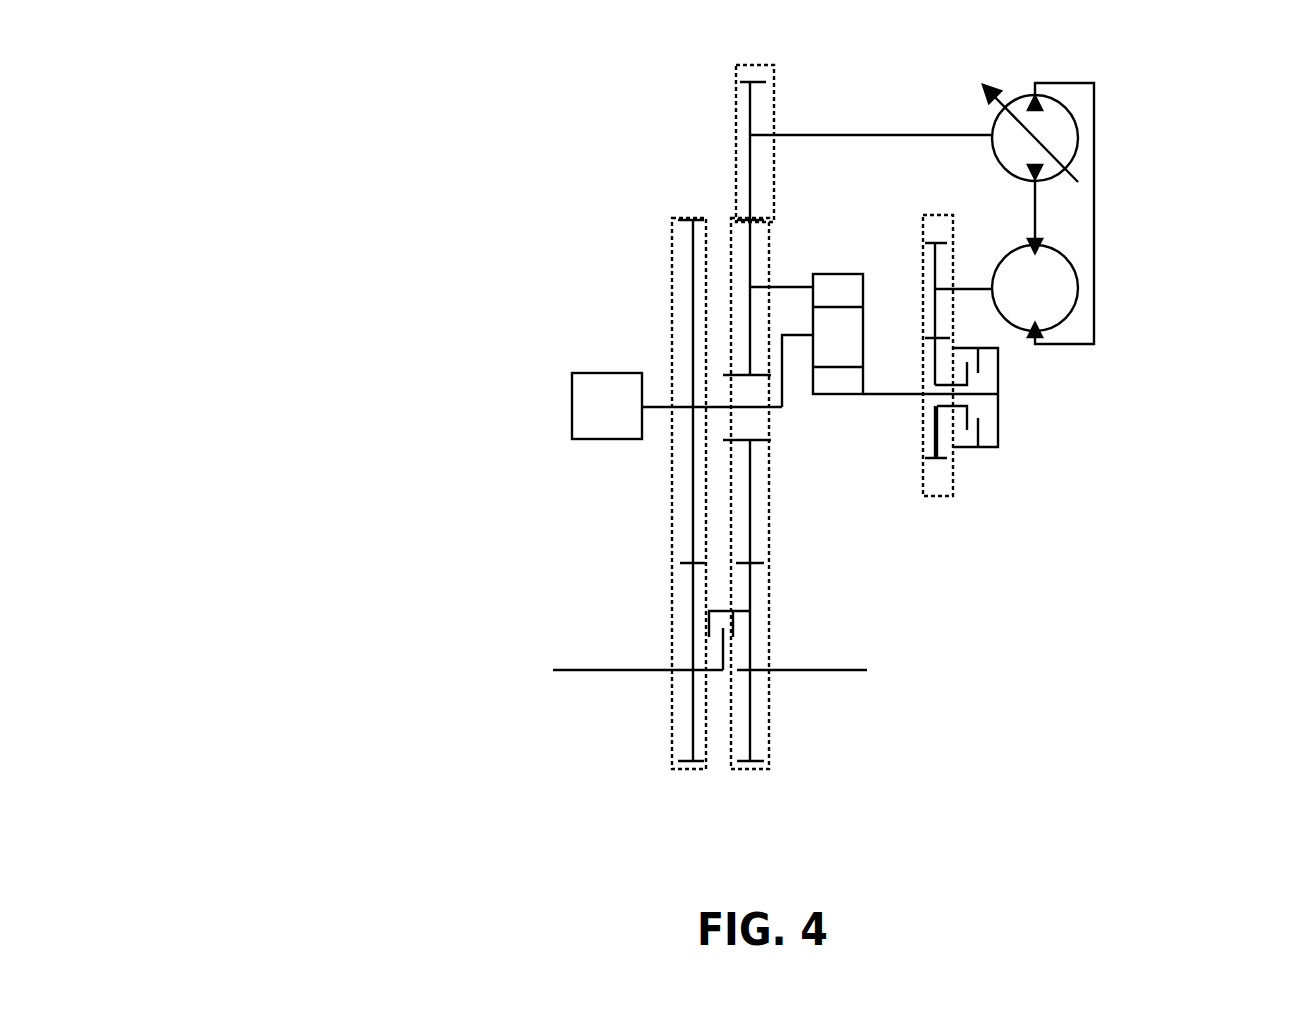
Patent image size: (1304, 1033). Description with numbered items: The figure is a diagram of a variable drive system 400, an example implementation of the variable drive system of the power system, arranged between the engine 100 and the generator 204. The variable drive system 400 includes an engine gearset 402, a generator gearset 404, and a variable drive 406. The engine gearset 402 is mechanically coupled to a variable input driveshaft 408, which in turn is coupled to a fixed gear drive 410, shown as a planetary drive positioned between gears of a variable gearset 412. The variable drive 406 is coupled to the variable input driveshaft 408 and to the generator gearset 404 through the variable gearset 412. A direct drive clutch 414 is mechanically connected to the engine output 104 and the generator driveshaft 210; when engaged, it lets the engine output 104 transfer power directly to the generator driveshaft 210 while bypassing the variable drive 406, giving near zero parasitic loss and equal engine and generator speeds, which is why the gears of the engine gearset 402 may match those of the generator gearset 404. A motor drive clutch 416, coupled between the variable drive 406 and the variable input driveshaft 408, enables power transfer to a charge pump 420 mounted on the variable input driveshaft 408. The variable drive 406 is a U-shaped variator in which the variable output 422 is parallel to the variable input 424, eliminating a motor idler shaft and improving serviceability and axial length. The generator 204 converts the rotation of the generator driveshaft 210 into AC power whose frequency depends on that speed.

The variable drive system 400 is at (276, 78).
The engine gearset 402 is at (672, 520).
The generator gearset 404 is at (770, 510).
The variable drive 406 is at (1119, 191).
The variable input driveshaft 408 is at (618, 400).
The fixed gear drive 410 is at (837, 274).
The variable gearset 412 is at (736, 133).
The direct drive clutch 414 is at (722, 608).
The motor drive clutch 416 is at (1000, 410).
The charge pump 420 is at (568, 410).
The variable output 422 is at (953, 289).
The variable input 424 is at (918, 135).
The engine output 104 is at (577, 670).
The generator driveshaft 210 is at (843, 670).
The engine 100 is at (536, 696).
The generator 204 is at (966, 690).